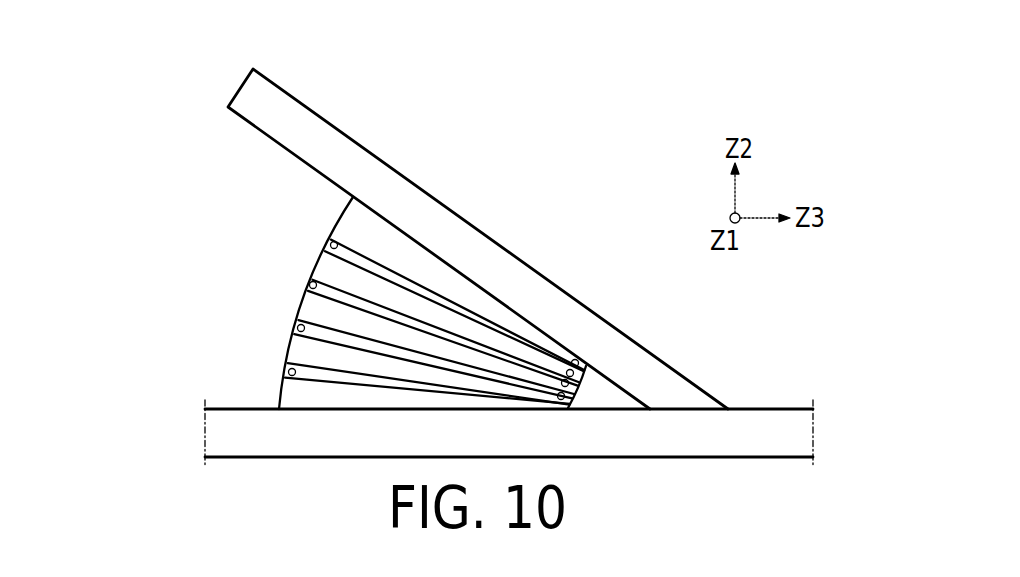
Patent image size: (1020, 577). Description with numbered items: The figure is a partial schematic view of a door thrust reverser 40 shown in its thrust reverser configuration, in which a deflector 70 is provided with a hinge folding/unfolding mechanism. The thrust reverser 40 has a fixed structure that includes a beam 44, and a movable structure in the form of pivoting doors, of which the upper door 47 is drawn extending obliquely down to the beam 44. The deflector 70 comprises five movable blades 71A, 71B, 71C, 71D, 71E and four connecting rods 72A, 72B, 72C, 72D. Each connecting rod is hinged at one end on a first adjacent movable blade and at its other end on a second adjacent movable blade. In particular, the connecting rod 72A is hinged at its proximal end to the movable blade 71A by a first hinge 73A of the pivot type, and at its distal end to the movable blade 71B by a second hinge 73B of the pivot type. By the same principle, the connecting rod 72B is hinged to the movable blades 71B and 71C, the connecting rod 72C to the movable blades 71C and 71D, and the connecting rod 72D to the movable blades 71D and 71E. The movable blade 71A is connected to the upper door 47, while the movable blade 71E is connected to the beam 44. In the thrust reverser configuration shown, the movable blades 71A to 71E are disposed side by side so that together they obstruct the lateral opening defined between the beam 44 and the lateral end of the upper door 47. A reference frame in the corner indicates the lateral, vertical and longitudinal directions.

The thrust reverser 40 is at (547, 152).
The beam 44 is at (672, 432).
The upper door 47 is at (502, 243).
The deflector 70 is at (92, 108).
The movable blade 71A is at (347, 218).
The movable blade 71B is at (323, 265).
The movable blade 71C is at (306, 308).
The movable blade 71D is at (294, 355).
The movable blade 71E is at (286, 398).
The connecting rod 72A is at (330, 245).
The connecting rod 72B is at (310, 285).
The connecting rod 72C is at (298, 328).
The connecting rod 72D is at (288, 372).
The first hinge 73A is at (580, 359).
The second hinge 73B is at (341, 237).